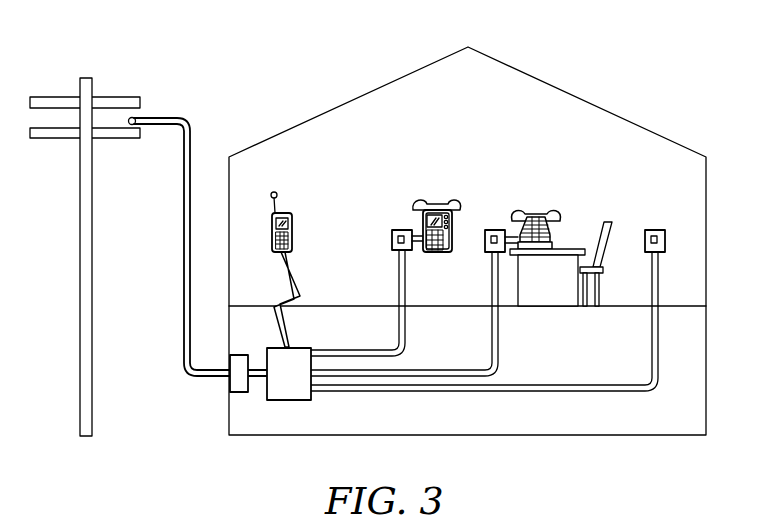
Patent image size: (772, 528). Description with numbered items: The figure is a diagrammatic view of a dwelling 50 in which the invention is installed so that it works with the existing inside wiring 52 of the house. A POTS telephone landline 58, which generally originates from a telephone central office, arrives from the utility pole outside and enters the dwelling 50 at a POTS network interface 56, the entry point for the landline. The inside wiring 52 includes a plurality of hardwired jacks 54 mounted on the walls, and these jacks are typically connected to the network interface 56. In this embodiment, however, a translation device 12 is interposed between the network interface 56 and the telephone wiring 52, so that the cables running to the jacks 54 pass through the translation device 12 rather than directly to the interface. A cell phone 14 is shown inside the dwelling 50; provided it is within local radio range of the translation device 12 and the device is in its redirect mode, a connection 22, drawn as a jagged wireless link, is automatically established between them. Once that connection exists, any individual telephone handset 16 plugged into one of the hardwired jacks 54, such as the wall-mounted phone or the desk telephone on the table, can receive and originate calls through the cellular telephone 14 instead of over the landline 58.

The translation device 12 is at (300, 401).
The cell phone 14 is at (292, 219).
The telephone handset 16 is at (441, 253).
The connection 22 is at (297, 283).
The dwelling 50 is at (670, 436).
The inside wiring 52 is at (423, 393).
The hardwired jacks 54 is at (392, 240).
The network interface 56 is at (237, 393).
The telephone landline 58 is at (183, 231).